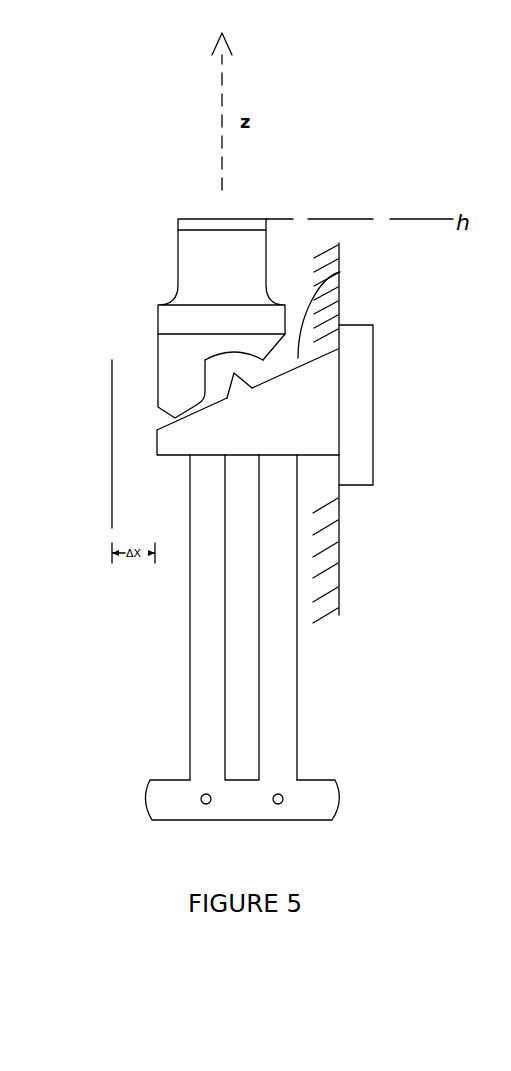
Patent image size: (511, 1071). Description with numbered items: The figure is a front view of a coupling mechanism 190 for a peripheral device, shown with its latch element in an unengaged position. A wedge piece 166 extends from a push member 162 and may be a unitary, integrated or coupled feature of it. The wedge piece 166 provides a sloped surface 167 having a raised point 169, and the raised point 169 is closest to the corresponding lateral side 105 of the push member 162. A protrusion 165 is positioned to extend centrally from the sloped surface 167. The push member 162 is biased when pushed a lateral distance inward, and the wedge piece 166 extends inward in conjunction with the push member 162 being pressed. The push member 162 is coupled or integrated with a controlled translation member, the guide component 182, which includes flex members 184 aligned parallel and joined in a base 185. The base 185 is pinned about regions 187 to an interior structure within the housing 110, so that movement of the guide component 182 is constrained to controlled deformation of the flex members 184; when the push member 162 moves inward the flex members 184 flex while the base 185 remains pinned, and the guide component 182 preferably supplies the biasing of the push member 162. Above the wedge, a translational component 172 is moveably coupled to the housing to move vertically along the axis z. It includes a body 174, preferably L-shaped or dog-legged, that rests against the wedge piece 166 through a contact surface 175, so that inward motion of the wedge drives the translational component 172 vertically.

The coupling mechanism 190 is at (143, 195).
The translational component 172 is at (148, 317).
The body 174 is at (168, 350).
The contact surface 175 is at (188, 377).
The protrusion 165 is at (238, 388).
The wedge piece 166 is at (278, 405).
The push member 162 is at (387, 420).
The lateral side 105 is at (345, 538).
The housing 110 is at (322, 585).
The sloped surface 167 is at (343, 283).
The raised point 169 is at (330, 358).
The guide component 182 is at (152, 690).
The flex members 184 is at (205, 643).
The base 185 is at (238, 808).
The regions 187 is at (201, 797).